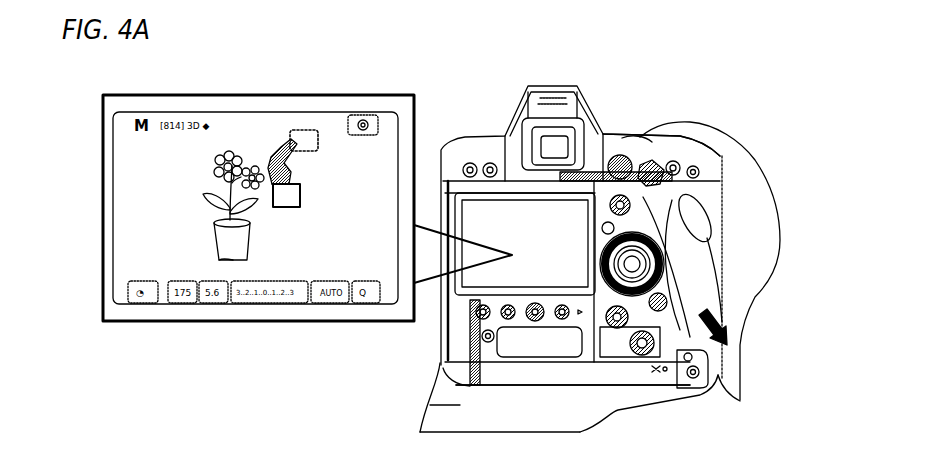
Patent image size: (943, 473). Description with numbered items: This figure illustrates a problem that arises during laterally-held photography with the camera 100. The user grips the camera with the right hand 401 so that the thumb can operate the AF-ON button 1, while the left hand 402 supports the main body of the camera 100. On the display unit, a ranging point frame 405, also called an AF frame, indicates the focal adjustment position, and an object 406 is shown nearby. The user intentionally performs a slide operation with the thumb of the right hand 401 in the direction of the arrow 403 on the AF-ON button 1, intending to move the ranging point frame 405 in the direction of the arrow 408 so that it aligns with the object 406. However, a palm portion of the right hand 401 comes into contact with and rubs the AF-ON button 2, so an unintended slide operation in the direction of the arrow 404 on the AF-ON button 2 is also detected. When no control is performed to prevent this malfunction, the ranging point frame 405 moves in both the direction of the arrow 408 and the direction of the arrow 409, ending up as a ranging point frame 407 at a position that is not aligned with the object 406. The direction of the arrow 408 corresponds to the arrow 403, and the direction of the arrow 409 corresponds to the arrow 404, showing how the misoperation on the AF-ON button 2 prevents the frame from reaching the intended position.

The camera 100 is at (473, 97).
The AF-ON button 1 is at (632, 135).
The AF-ON button 2 is at (778, 238).
The right hand 401 is at (730, 200).
The left hand 402 is at (477, 403).
The arrow 403 is at (667, 146).
The arrow 404 is at (724, 315).
The ranging point frame 405 is at (304, 128).
The object 406 is at (233, 152).
The ranging point frame 407 is at (293, 207).
The arrow 408 is at (280, 148).
The arrow 409 is at (287, 180).